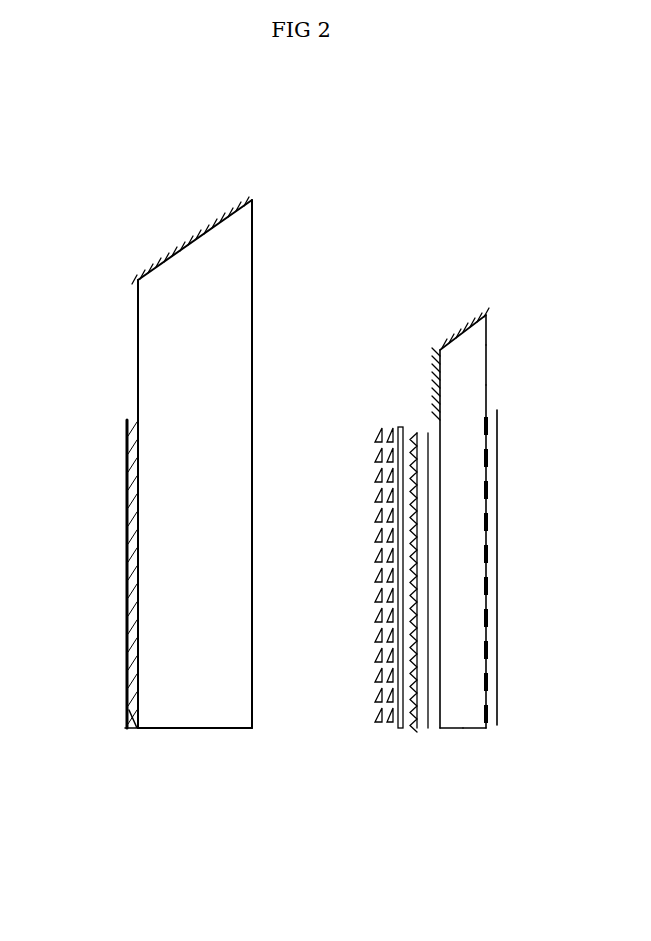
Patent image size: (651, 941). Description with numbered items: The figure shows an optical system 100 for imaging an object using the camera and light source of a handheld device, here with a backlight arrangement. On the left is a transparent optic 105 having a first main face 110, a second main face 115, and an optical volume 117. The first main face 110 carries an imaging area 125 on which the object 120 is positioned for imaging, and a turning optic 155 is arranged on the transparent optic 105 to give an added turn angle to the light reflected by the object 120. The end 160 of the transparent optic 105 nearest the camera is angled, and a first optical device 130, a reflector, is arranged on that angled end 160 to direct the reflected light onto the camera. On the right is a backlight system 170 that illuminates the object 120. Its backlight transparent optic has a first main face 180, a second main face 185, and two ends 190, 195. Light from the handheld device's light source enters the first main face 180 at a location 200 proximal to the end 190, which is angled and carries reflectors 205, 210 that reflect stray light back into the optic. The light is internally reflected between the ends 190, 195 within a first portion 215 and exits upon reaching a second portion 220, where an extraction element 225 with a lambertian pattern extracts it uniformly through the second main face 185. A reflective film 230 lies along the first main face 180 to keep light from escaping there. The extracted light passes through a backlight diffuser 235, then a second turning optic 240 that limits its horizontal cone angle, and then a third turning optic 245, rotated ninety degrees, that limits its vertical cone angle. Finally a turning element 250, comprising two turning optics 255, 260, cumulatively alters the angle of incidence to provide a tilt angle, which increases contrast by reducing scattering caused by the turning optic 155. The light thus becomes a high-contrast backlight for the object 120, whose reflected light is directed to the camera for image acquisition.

The optical system 100 is at (178, 142).
The transparent optic 105 is at (255, 250).
The first main face 110 is at (137, 313).
The second main face 115 is at (255, 328).
The optical volume 117 is at (202, 707).
The object 120 is at (125, 558).
The imaging area 125 is at (150, 728).
The first optical device 130 is at (187, 230).
The turning optic 155 is at (127, 648).
The angled end 160 is at (165, 253).
The backlight system 170 is at (446, 213).
The first main face 180 is at (487, 398).
The second main face 185 is at (443, 728).
The end 190 is at (487, 315).
The end 195 is at (470, 728).
The location 200 is at (487, 327).
The reflector 205 is at (448, 320).
The reflector 210 is at (430, 385).
The first portion 215 is at (487, 368).
The second portion 220 is at (489, 655).
The extraction element 225 is at (487, 530).
The reflective film 230 is at (498, 437).
The backlight diffuser 235 is at (428, 728).
The second turning optic 240 is at (413, 726).
The third turning optic 245 is at (400, 425).
The turning element 250 is at (368, 437).
The turning optic 255 is at (382, 570).
The turning optic 260 is at (377, 712).